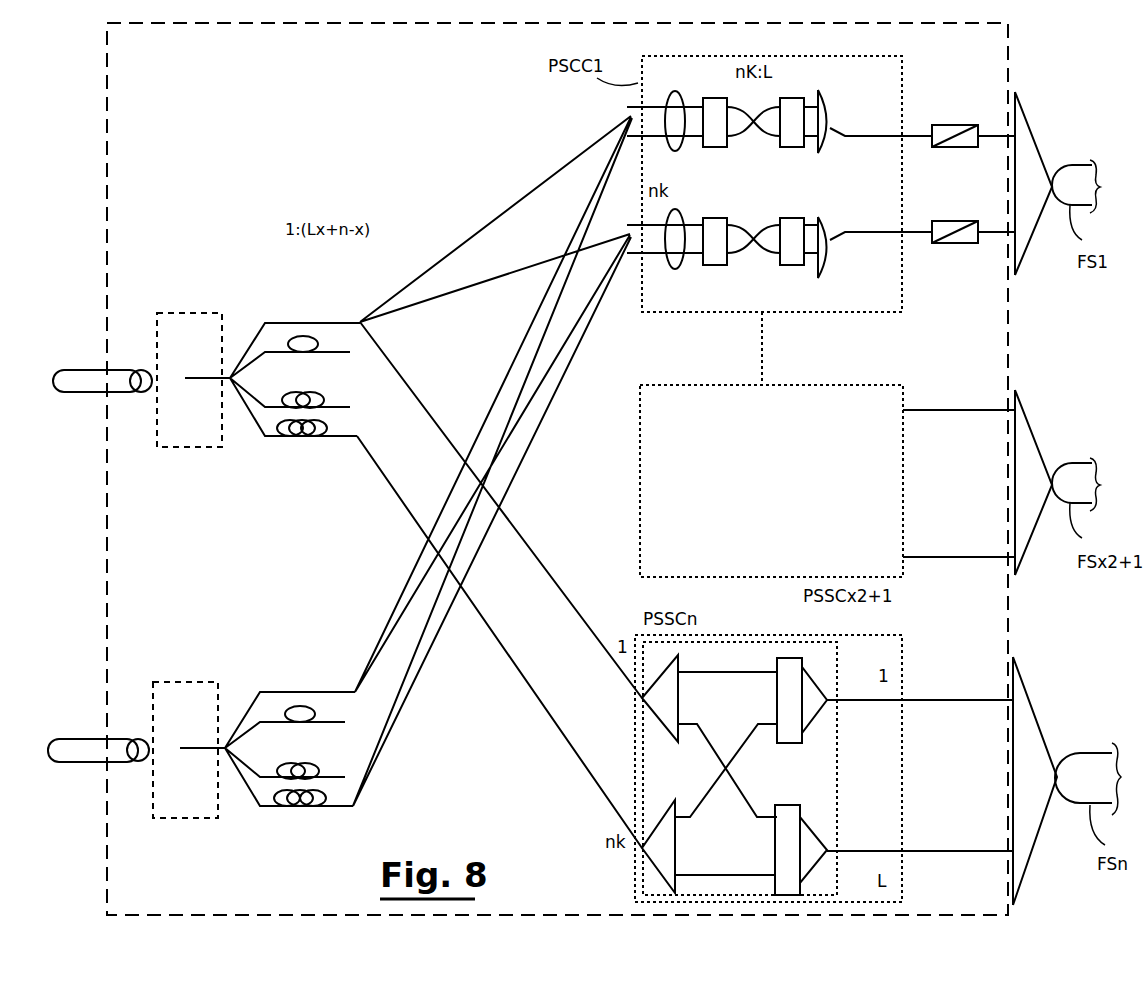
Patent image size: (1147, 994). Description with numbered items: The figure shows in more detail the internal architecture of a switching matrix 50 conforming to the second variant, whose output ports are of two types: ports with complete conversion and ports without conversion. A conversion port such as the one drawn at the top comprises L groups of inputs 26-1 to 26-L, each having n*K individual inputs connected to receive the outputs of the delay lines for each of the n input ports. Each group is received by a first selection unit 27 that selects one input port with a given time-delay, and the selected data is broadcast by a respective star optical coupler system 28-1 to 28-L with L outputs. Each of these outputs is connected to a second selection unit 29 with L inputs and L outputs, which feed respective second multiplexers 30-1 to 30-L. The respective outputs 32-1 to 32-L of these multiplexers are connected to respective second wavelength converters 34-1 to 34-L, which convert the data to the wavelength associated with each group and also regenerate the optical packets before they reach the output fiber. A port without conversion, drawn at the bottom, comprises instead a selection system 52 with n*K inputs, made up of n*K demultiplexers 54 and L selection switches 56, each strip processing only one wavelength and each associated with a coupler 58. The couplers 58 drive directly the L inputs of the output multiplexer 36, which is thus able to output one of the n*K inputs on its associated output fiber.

The switching matrix 50 is at (253, 109).
The group of inputs 26-1 is at (675, 152).
The group of inputs 26-L is at (676, 272).
The first selection unit 27 is at (718, 98).
The star optical coupler system 28-1 is at (762, 140).
The star optical coupler system 28-L is at (762, 260).
The second selection unit 29 is at (790, 98).
The second multiplexer 30-1 is at (860, 135).
The second multiplexer 30-L is at (842, 244).
The output of second multiplexer 32-1 is at (826, 105).
The output of second multiplexer 32-L is at (826, 220).
The second wavelength converter 34-1 is at (935, 125).
The second wavelength converter 34-L is at (958, 244).
The output multiplexer 36 is at (1040, 165).
The selection system 52 is at (808, 778).
The demultiplexer 54 is at (640, 718).
The selection switch 56 is at (783, 712).
The coupler 58 is at (818, 690).